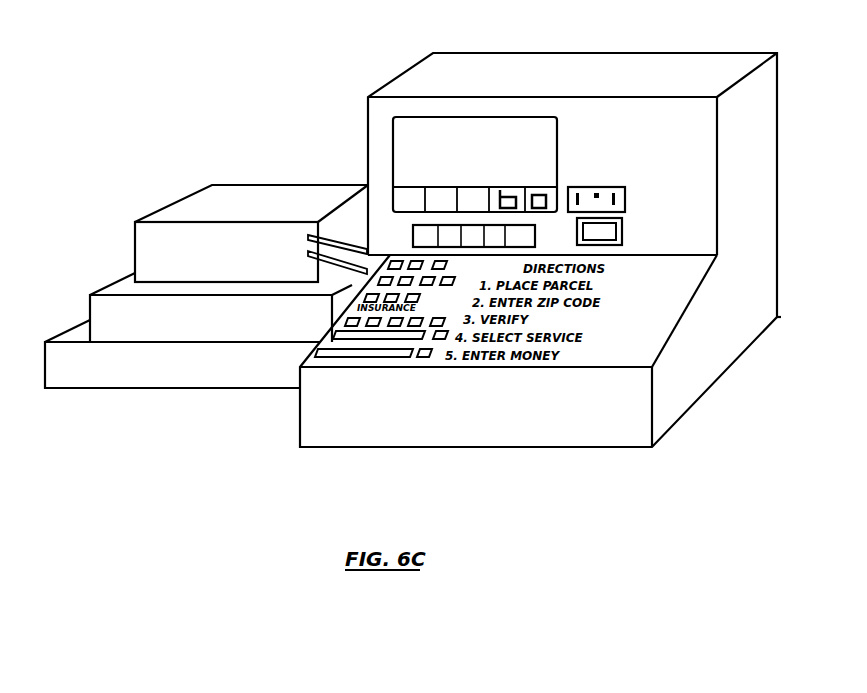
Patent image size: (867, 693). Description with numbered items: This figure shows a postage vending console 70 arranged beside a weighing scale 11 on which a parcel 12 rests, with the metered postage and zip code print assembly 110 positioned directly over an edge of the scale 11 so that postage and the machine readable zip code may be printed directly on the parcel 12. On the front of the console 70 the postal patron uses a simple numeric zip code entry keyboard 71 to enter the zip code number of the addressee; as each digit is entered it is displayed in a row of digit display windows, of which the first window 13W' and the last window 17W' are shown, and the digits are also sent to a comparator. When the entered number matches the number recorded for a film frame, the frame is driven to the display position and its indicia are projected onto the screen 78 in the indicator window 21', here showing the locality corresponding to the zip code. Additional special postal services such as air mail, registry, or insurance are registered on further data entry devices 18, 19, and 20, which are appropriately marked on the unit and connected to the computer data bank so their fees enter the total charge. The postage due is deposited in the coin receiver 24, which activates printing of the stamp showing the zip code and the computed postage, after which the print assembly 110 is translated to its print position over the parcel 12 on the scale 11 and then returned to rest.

The console 70 is at (664, 54).
The screen 78 is at (393, 140).
The indicator window 21' is at (500, 125).
The coin receiver 24 is at (620, 188).
The digit display window 17W' is at (612, 231).
The digit display window 13W' is at (453, 234).
The numeric zip code entry keyboard 71 is at (445, 267).
The data entry device 18 is at (446, 326).
The data entry device 20 is at (382, 339).
The data entry device 19 is at (352, 342).
The print assembly 110 is at (272, 210).
The parcel 12 is at (216, 325).
The scale 11 is at (211, 371).